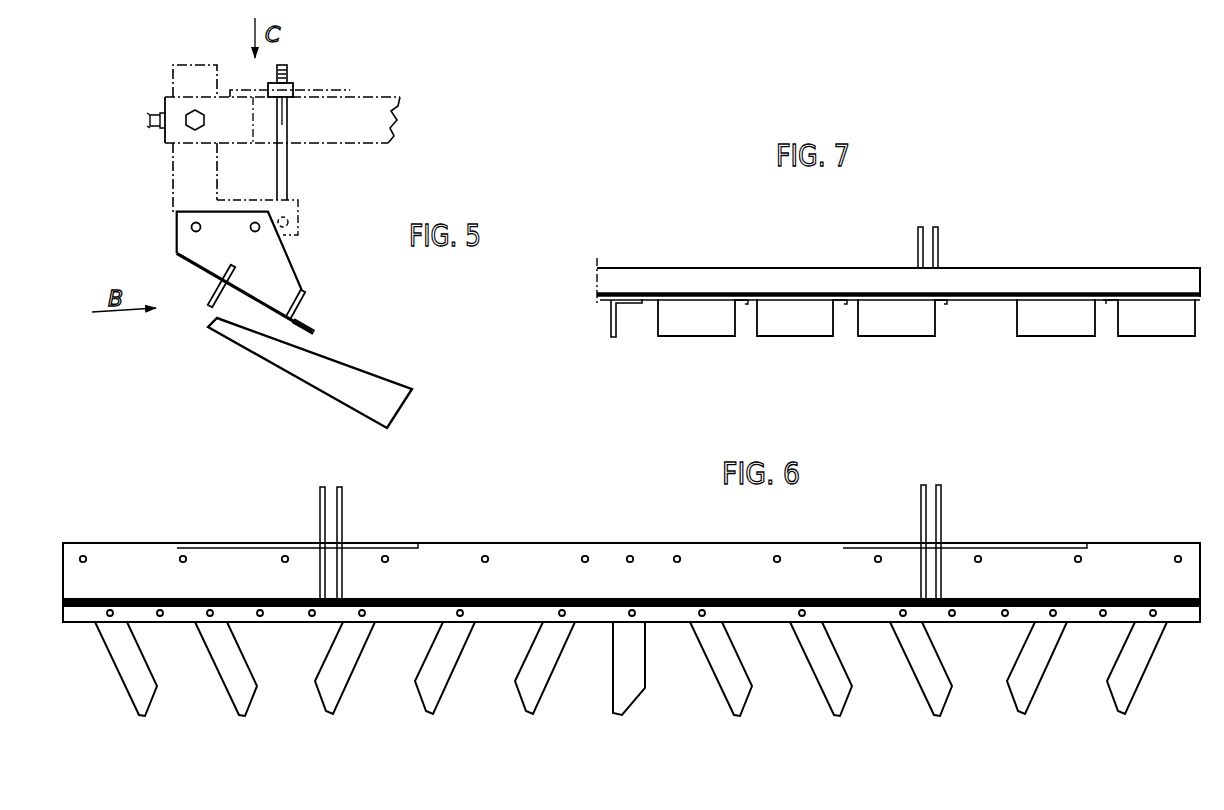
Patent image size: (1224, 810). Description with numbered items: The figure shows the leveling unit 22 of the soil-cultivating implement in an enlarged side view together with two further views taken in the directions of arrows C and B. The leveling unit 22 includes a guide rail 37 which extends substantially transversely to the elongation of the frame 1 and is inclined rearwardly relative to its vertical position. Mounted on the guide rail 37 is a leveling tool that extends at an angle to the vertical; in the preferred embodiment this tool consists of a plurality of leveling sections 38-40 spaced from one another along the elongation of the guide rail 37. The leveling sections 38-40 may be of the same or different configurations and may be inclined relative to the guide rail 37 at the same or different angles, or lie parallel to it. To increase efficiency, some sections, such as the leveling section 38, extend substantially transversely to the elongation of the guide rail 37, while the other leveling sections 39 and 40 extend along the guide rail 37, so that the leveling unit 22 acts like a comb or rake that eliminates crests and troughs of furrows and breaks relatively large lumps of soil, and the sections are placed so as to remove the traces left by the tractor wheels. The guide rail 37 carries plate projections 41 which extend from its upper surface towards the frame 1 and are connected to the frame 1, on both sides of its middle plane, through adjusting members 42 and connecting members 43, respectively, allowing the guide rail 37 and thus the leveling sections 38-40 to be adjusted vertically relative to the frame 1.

In FIG. 5, the frame 1 is at (371, 96).
In FIG. 5, the leveling unit 22 is at (279, 340).
In FIG. 7, the leveling unit 22 is at (870, 276).
In FIG. 6, the leveling unit 22 is at (631, 603).
In FIG. 5, the guide rail 37 is at (252, 305).
In FIG. 7, the guide rail 37 is at (1022, 280).
In FIG. 6, the guide rail 37 is at (462, 560).
In FIG. 7, the leveling section 38 is at (612, 328).
In FIG. 6, the leveling section 38 is at (642, 693).
In FIG. 7, the leveling section 39 is at (893, 332).
In FIG. 6, the leveling section 39 is at (530, 687).
In FIG. 7, the leveling section 40 is at (1143, 323).
In FIG. 6, the leveling section 40 is at (240, 697).
In FIG. 5, the leveling sections 38-40 is at (340, 383).
In FIG. 5, the plate projections 41 is at (213, 262).
In FIG. 7, the plate projections 41 is at (940, 240).
In FIG. 6, the plate projections 41 is at (342, 517).
In FIG. 5, the adjusting members 42 is at (286, 182).
In FIG. 5, the connecting members 43 is at (185, 183).